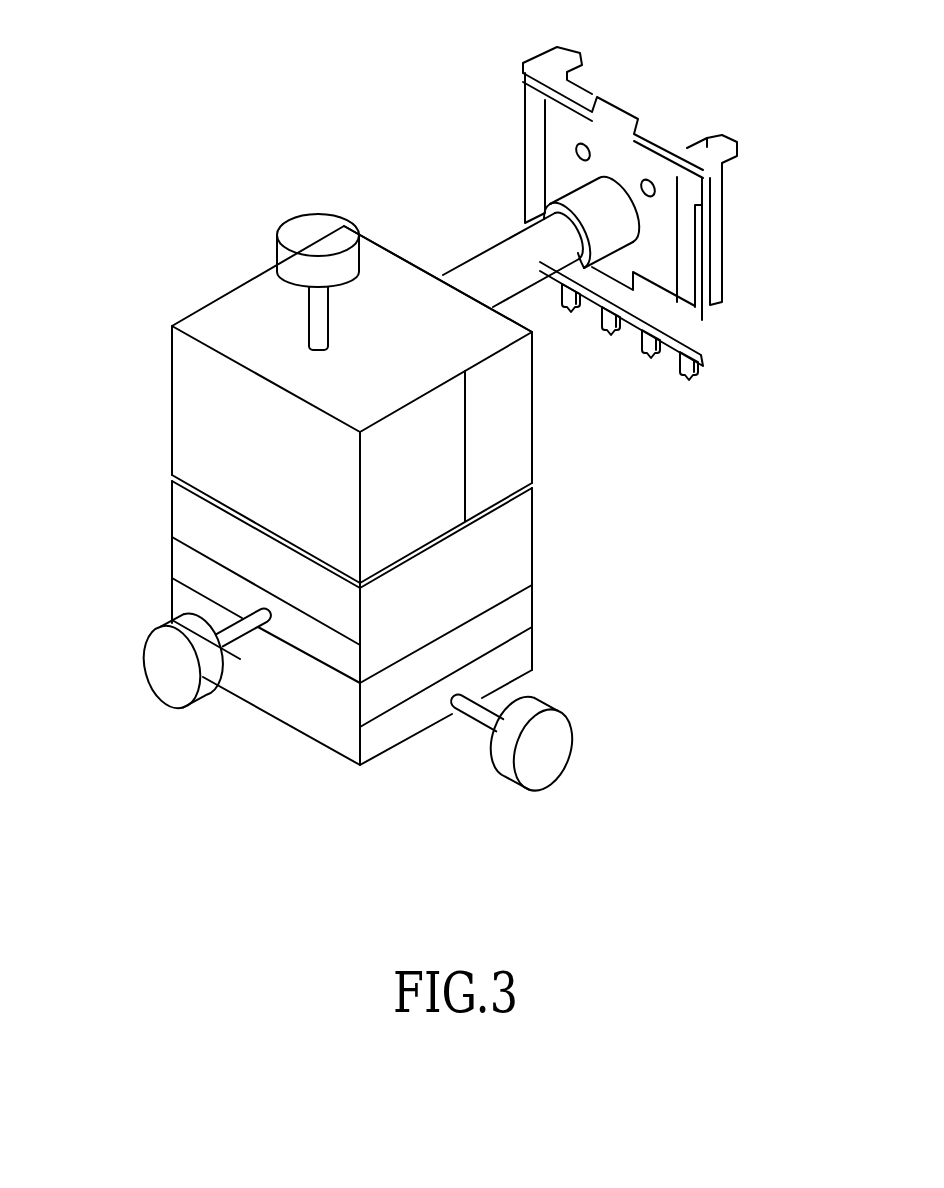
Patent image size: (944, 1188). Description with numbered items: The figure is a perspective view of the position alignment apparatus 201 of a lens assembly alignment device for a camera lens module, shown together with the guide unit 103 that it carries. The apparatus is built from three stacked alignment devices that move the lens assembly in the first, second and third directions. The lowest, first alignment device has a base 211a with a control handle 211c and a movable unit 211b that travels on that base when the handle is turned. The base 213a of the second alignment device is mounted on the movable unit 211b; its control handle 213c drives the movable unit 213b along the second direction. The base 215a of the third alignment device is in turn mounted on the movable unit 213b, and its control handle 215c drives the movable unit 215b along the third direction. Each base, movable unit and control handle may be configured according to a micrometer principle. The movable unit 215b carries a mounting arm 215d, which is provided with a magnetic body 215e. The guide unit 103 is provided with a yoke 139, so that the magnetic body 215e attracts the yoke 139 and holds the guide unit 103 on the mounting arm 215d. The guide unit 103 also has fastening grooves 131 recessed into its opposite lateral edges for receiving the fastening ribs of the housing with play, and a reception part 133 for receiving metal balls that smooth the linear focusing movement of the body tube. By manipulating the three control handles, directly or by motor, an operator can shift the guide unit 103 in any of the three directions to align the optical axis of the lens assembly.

The guide unit 103 is at (652, 92).
The fastening grooves 131 is at (705, 265).
The reception part 133 is at (718, 208).
The yoke 139 is at (528, 80).
The position alignment apparatus 201 is at (140, 393).
The base 211a is at (522, 652).
The movable unit 211b is at (387, 698).
The control handle 211c is at (547, 757).
The base 213a is at (318, 650).
The movable unit 213b is at (192, 528).
The control handle 213c is at (163, 672).
The base 215a is at (208, 316).
The movable unit 215b is at (385, 262).
The control handle 215c is at (302, 228).
The mounting arm 215d is at (483, 262).
The magnetic body 215e is at (550, 207).